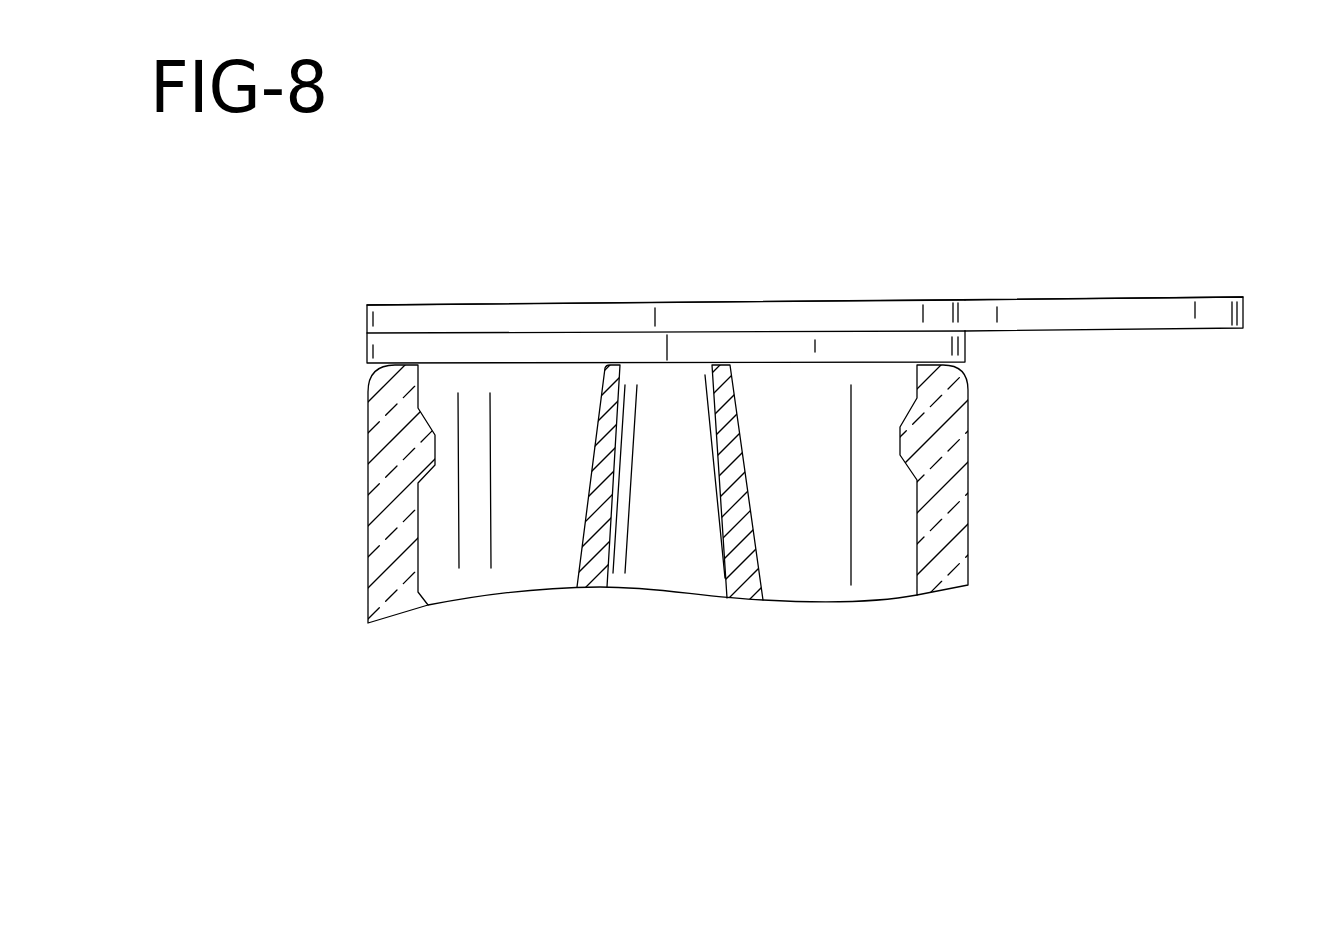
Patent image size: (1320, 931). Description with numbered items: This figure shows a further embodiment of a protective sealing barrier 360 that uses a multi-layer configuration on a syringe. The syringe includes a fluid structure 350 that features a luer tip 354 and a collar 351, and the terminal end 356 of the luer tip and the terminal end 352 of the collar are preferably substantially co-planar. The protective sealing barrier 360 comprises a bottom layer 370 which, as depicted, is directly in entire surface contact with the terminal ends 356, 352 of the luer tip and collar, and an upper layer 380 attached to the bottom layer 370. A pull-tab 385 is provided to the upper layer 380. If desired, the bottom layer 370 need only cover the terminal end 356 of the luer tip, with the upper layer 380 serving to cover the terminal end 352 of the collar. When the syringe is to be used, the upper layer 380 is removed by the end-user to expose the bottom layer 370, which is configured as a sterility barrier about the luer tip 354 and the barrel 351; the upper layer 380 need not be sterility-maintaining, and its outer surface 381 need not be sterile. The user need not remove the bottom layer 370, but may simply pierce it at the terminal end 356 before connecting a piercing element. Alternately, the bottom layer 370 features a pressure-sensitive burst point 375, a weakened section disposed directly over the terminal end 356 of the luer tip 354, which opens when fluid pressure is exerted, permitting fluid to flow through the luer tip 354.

The fluid structure 350 is at (1142, 516).
The collar 351 is at (369, 543).
The terminal end of collar 352 is at (968, 450).
The luer tip 354 is at (745, 522).
The terminal end of luer tip 356 is at (728, 362).
The protective sealing barrier 360 is at (298, 385).
The bottom layer 370 is at (365, 319).
The pressure-sensitive burst point 375 is at (668, 354).
The upper layer 380 is at (407, 323).
The outer surface of upper layer 381 is at (523, 305).
The pull-tab 385 is at (1118, 315).